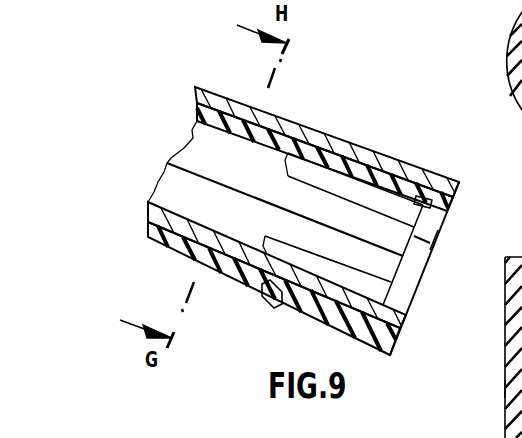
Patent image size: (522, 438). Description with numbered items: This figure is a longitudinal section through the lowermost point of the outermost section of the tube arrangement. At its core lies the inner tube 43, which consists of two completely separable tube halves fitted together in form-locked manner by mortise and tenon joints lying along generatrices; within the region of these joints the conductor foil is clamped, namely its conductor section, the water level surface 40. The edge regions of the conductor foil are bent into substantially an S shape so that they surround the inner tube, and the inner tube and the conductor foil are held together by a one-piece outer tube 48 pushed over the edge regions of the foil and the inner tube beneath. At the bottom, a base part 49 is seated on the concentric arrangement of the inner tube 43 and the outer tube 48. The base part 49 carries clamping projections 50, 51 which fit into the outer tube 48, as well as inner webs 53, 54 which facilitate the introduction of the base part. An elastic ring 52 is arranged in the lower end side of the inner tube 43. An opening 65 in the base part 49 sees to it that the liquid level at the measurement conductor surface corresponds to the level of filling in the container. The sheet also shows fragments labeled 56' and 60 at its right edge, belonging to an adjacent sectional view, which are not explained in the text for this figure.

The water level surface 40 is at (171, 164).
The inner tube 43 is at (148, 211).
The outer tube 48 is at (150, 238).
The base part 49 is at (327, 316).
The clamping projection 50 is at (338, 142).
The clamping projection 51 is at (274, 302).
The elastic ring 52 is at (437, 215).
The inner web 53 is at (266, 238).
The inner web 54 is at (289, 168).
The opening 65 is at (424, 250).
The wall 56' is at (488, 347).
The plate 60 is at (506, 388).